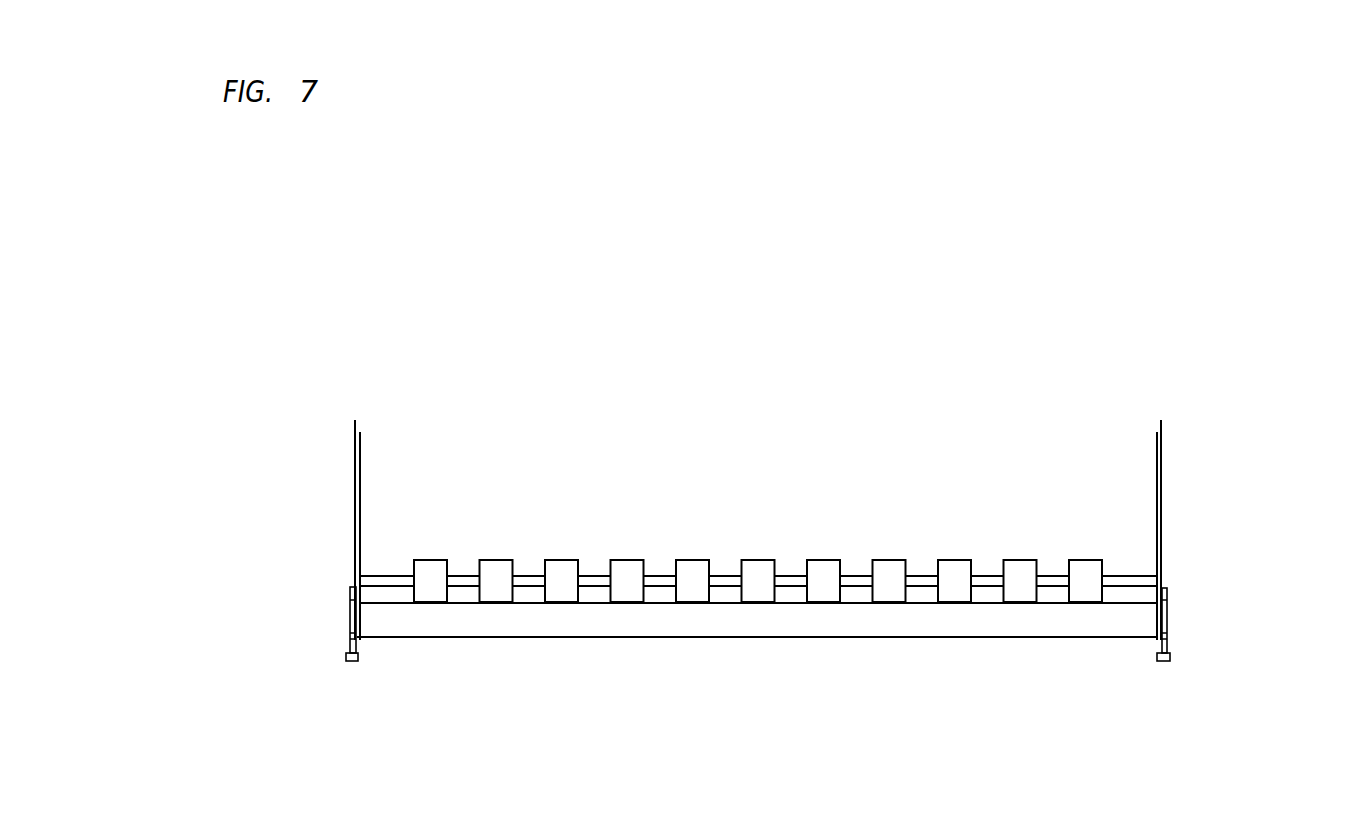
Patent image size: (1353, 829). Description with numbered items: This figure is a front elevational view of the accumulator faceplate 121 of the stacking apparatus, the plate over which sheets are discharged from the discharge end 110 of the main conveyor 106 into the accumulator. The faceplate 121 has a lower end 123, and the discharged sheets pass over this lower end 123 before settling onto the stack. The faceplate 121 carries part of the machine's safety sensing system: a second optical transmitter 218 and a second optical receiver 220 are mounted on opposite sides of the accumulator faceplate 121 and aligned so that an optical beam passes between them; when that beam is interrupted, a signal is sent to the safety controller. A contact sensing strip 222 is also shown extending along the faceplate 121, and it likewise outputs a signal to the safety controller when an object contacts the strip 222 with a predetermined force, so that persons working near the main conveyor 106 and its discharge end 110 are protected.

The discharge end 110 is at (1118, 347).
The main conveyor 106 is at (792, 572).
The accumulator faceplate 121 is at (1167, 580).
The lower end 123 is at (1140, 637).
The contact sensing strip 222 is at (757, 638).
The second optical transmitter 218 is at (348, 659).
The second optical receiver 220 is at (1168, 658).